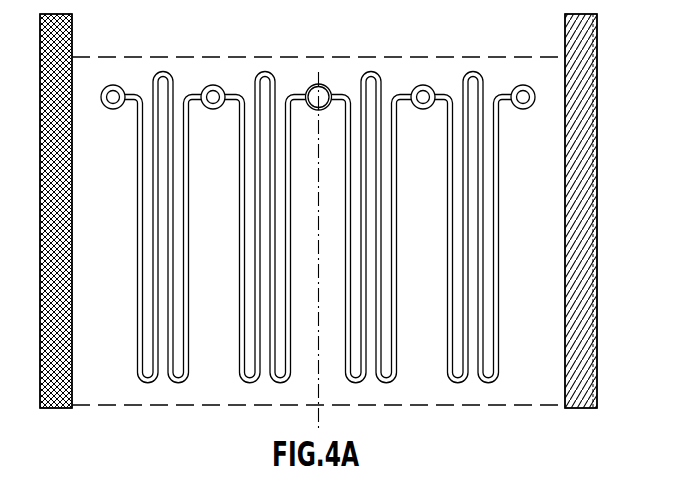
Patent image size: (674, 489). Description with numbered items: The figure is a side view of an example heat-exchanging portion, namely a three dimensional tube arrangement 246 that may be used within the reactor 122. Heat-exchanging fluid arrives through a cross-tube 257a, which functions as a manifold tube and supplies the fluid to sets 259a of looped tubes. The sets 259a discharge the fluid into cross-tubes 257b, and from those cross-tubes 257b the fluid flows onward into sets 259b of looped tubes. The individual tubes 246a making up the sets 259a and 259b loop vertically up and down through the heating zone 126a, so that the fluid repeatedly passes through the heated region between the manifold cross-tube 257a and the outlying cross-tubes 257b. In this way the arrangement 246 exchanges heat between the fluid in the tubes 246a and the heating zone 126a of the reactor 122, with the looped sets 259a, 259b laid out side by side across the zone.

The reactor 122 is at (598, 52).
The heating zone 126a is at (554, 56).
The three dimensional tube arrangement 246 is at (358, 225).
The tubes 246a is at (190, 128).
The cross-tube 257a is at (313, 85).
The cross-tubes 257b is at (221, 88).
The sets of looped tubes 259a is at (291, 365).
The sets of looped tubes 259b is at (136, 333).